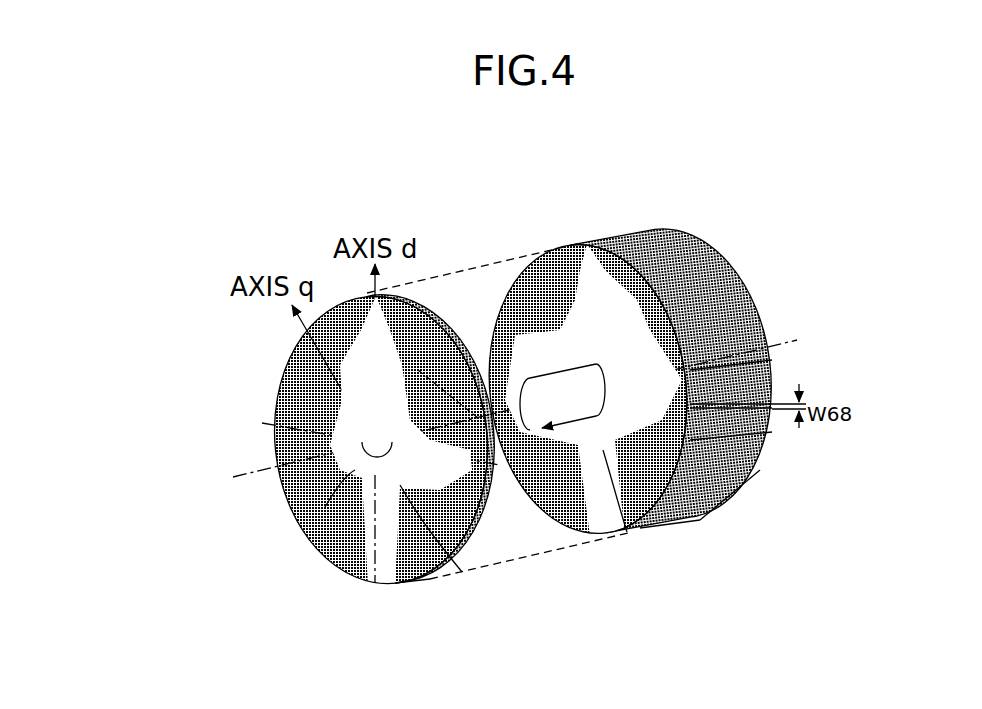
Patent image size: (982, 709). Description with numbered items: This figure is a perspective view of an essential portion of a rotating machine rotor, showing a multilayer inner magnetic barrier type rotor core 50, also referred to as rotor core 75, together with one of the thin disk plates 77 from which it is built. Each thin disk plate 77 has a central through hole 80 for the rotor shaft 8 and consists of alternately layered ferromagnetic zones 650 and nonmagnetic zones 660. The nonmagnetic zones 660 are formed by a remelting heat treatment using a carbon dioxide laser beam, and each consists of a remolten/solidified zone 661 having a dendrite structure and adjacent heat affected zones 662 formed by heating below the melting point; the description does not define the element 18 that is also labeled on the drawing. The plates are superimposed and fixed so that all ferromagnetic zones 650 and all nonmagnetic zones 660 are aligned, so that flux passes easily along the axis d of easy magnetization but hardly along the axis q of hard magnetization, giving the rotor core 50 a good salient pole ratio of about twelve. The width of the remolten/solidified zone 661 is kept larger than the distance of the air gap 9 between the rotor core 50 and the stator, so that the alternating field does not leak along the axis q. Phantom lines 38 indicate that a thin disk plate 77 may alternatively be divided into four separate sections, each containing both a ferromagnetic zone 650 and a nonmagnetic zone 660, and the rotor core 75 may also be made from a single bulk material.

The rotor shaft 8 is at (603, 515).
The air gap 9 is at (695, 525).
The rotor core band 18 is at (773, 400).
The phantom lines 38 is at (352, 582).
The rotor core 50 is at (740, 252).
The rotor core 75 is at (601, 218).
The thin disk plate 77 is at (412, 594).
The central through hole 80 is at (325, 507).
The ferromagnetic zone 650 is at (462, 570).
The nonmagnetic zone 660 is at (485, 525).
The remolten/solidified zone 661 is at (770, 362).
The heat affected zones 662 is at (770, 362).